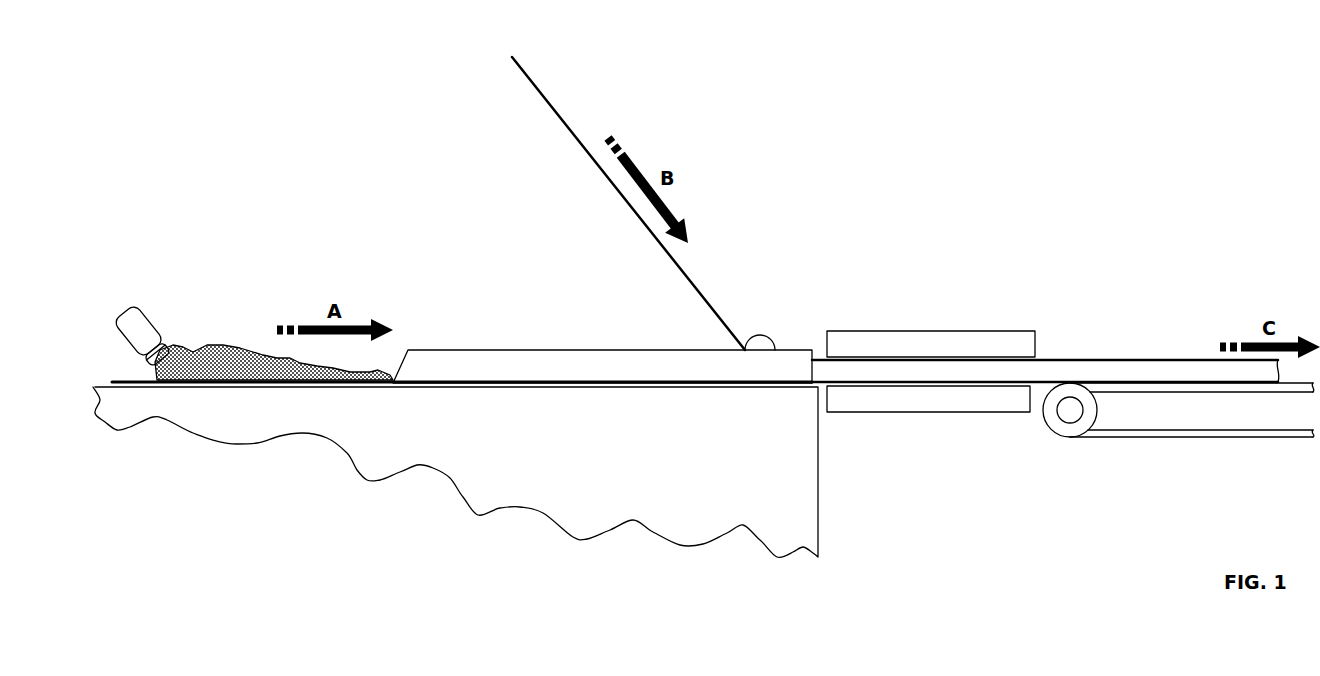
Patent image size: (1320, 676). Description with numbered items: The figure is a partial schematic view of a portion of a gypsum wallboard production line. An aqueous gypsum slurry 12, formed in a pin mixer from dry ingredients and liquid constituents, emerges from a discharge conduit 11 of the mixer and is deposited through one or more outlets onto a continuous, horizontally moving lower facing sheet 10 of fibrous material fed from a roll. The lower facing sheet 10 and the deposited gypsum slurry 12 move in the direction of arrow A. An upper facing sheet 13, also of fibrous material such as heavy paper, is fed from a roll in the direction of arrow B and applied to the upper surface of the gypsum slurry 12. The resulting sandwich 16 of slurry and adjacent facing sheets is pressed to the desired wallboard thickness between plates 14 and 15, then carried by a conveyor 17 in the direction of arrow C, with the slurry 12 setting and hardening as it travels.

The lower facing sheet 10 is at (112, 374).
The discharge conduit 11 is at (146, 300).
The gypsum slurry 12 is at (255, 335).
The upper facing sheet 13 is at (566, 109).
The plate 14 is at (950, 328).
The plate 15 is at (919, 414).
The sandwich 16 is at (1143, 372).
The conveyor 17 is at (1249, 401).